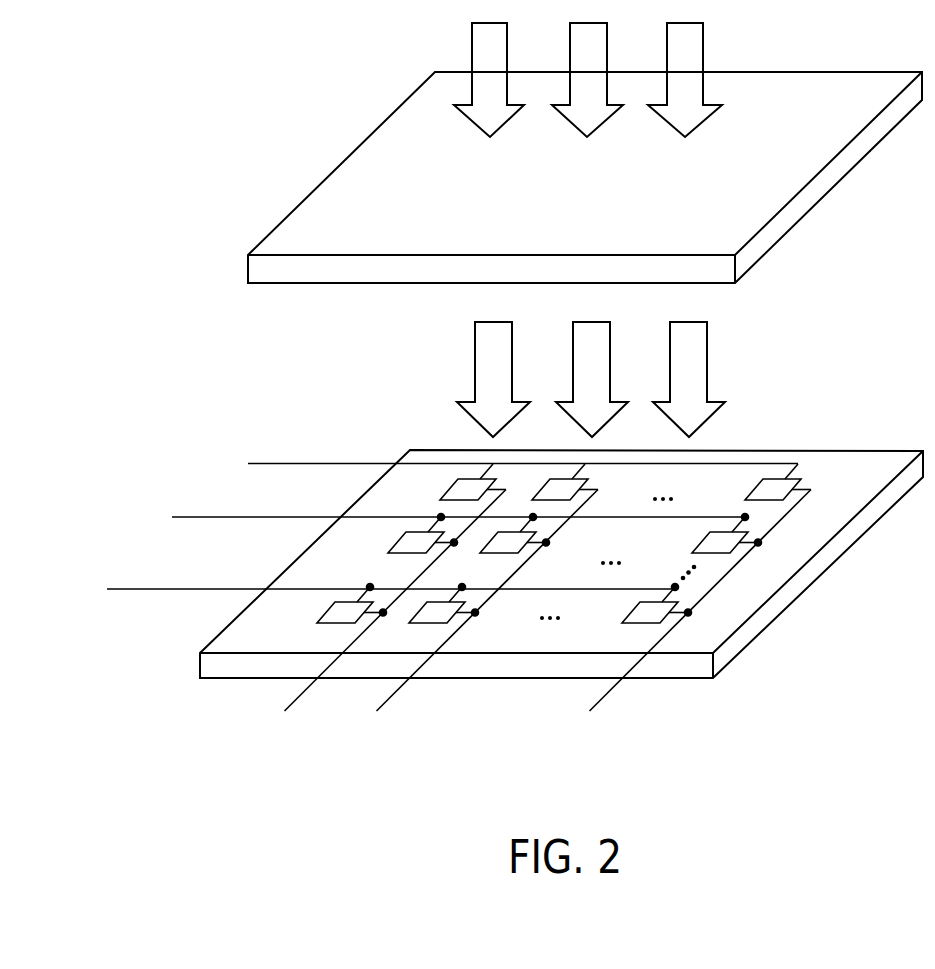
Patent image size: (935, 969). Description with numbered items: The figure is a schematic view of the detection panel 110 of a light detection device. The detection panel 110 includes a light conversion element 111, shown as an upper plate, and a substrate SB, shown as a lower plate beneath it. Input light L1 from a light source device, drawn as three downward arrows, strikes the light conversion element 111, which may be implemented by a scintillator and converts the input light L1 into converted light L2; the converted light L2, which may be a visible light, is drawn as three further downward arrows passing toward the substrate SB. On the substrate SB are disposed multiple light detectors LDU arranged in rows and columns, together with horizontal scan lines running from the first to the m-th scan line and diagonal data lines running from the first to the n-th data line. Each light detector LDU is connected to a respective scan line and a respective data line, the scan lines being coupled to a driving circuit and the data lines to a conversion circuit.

The detection panel 110 is at (478, 590).
The light conversion element 111 is at (812, 88).
The input light L1 is at (598, 80).
The converted light L2 is at (601, 379).
The substrate SB is at (835, 467).
The light detector LDU is at (335, 612).